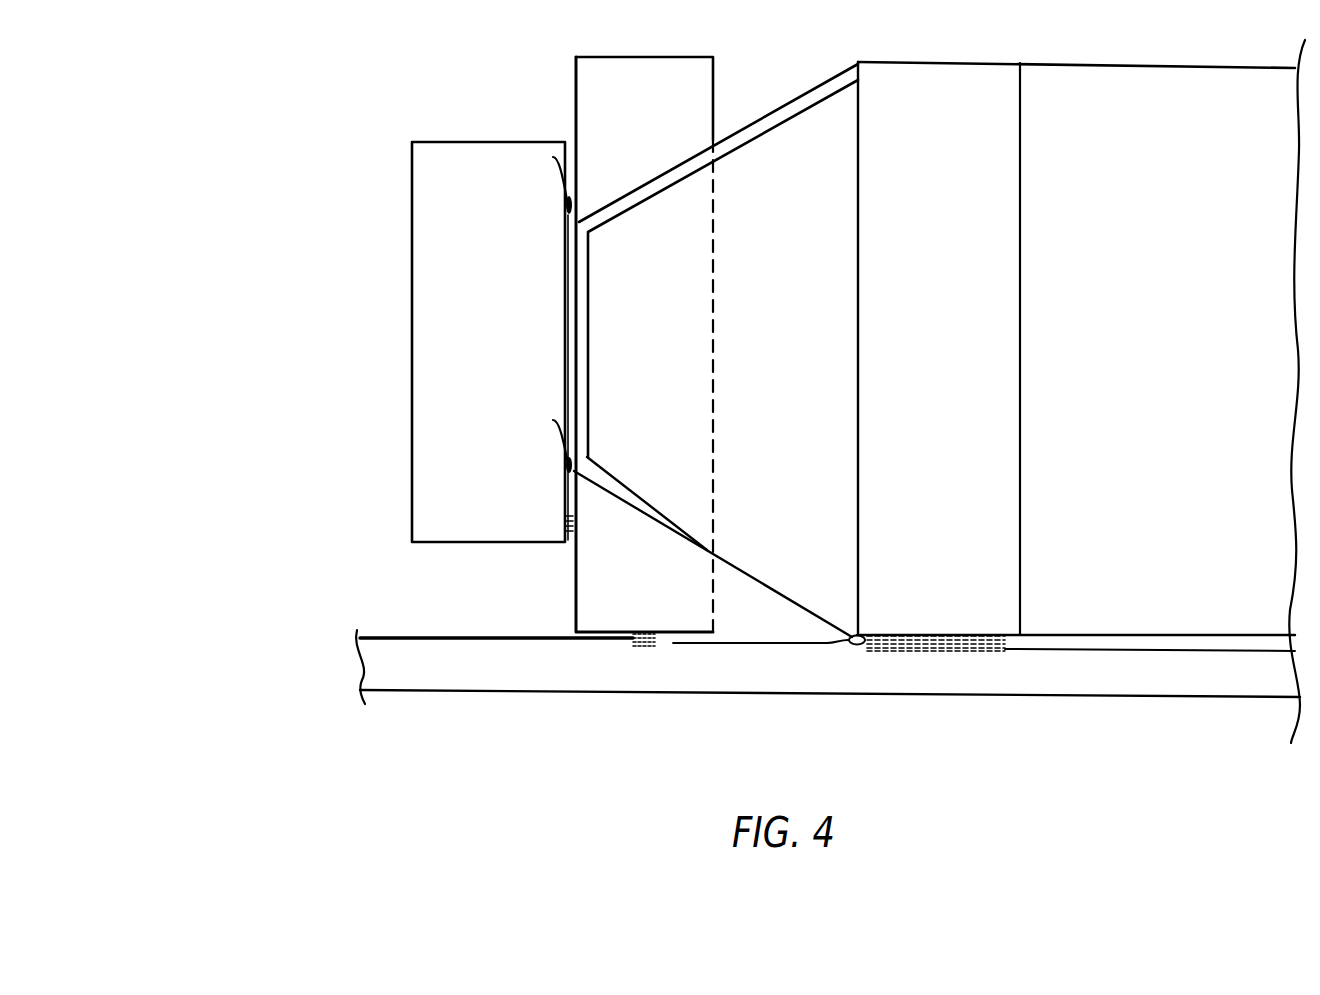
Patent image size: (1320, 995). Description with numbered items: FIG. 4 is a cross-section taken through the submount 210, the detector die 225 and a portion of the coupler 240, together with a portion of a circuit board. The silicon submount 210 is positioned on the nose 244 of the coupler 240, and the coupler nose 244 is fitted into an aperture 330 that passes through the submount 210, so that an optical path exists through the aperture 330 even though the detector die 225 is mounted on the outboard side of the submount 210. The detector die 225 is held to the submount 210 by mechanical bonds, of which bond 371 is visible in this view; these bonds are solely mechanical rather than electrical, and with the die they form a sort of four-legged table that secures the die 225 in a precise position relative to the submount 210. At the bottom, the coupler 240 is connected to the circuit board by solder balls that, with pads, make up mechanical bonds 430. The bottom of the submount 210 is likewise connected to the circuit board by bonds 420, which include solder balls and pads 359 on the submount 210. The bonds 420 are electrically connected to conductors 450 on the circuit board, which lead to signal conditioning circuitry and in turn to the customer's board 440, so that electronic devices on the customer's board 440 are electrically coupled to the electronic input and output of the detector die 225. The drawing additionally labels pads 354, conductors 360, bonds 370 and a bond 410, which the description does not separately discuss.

The submount 210 is at (576, 77).
The detector die 225 is at (513, 373).
The coupler 240 is at (1142, 63).
The nose 244 is at (840, 108).
The aperture 330 is at (718, 145).
The pads 354 is at (980, 622).
The pads 359 is at (651, 612).
The conductors 360 is at (556, 604).
The bonds 370 is at (569, 553).
The mechanical bond 371 is at (553, 420).
The bond 410 is at (553, 157).
The bonds 420 is at (672, 639).
The mechanical bonds 430 is at (851, 641).
The customer's board 440 is at (1077, 698).
The conductors 450 is at (425, 621).